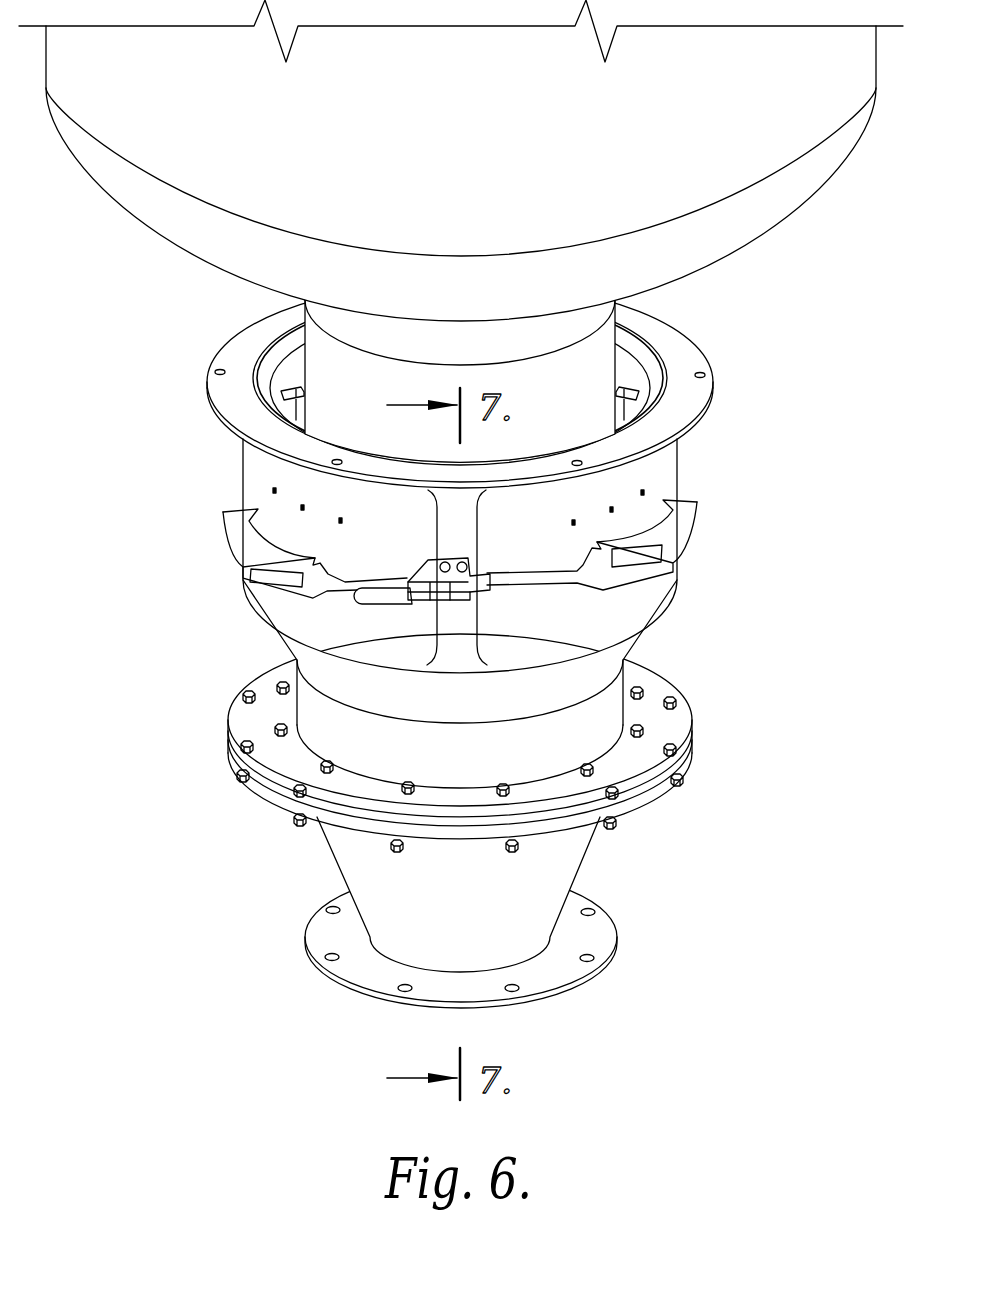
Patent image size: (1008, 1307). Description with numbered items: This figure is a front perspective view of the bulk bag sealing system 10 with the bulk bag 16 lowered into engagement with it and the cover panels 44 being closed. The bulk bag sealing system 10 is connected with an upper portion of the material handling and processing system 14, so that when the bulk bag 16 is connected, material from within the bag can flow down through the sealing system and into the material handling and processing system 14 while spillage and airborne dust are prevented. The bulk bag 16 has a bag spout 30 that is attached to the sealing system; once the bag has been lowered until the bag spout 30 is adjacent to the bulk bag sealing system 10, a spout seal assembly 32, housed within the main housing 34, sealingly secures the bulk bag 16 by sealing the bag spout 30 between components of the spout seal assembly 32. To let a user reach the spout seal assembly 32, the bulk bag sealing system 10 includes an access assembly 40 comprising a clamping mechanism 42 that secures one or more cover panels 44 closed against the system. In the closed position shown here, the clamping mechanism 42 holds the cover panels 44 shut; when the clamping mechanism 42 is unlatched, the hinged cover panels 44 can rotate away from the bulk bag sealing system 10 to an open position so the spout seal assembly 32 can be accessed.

The bulk bag sealing system 10 is at (450, 567).
The material handling and processing system 14 is at (367, 867).
The bulk bag 16 is at (794, 204).
The bag spout 30 is at (577, 407).
The spout seal assembly 32 is at (630, 366).
The main housing 34 is at (613, 657).
The access assembly 40 is at (657, 587).
The clamping mechanism 42 is at (373, 600).
The cover panels 44 is at (272, 602).